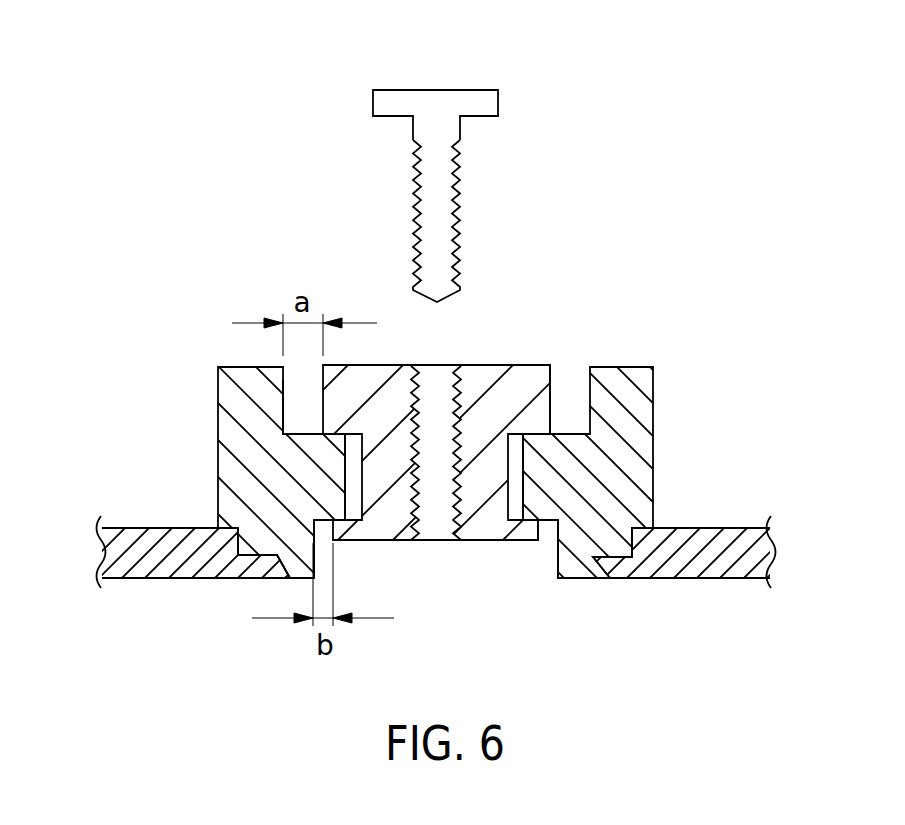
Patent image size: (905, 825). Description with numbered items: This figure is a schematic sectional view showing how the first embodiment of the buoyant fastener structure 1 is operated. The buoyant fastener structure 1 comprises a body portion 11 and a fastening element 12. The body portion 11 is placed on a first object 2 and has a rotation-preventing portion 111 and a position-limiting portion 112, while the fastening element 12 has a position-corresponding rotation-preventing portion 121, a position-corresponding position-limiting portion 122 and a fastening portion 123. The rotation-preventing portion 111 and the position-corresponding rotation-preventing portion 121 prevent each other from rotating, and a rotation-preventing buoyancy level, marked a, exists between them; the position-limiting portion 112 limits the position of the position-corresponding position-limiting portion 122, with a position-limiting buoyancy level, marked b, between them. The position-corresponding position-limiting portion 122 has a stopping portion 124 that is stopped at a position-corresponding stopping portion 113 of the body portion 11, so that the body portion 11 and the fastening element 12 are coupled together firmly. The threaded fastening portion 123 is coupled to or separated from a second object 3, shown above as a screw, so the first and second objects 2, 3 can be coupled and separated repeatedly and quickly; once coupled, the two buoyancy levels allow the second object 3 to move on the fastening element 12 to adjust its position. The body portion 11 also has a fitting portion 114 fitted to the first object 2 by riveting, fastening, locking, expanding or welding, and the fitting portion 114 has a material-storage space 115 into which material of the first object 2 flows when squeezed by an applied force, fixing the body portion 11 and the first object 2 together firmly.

The buoyant fastener structure 1 is at (446, 470).
The body portion 11 is at (438, 470).
The rotation-preventing portion 111 is at (289, 395).
The position-limiting portion 112 is at (355, 456).
The position-corresponding stopping portion 113 is at (323, 532).
The fitting portion 114 is at (584, 578).
The material-storage space 115 is at (652, 560).
The fastening element 12 is at (461, 433).
The position-corresponding rotation-preventing portion 121 is at (552, 380).
The position-corresponding position-limiting portion 122 is at (510, 500).
The fastening portion 123 is at (455, 405).
The stopping portion 124 is at (517, 530).
The first object 2 is at (163, 567).
The second object 3 is at (457, 90).